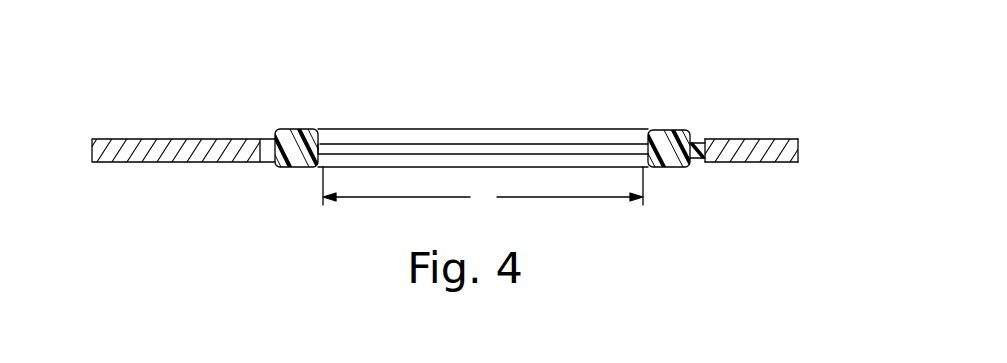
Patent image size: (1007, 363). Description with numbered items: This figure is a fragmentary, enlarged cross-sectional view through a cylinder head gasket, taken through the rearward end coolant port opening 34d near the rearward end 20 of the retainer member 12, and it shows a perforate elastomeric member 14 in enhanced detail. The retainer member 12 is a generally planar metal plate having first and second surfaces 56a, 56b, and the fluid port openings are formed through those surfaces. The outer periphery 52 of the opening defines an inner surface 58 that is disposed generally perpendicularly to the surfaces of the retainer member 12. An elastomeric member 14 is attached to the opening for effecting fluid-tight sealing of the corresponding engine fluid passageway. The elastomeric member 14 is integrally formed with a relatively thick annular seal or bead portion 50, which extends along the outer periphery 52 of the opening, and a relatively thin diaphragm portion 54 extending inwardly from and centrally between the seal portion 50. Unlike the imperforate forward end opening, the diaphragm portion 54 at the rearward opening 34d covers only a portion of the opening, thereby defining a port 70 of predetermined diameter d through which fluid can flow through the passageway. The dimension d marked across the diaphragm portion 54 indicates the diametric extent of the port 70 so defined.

The rearward end coolant port opening 34d is at (562, 61).
The rearward end 20 is at (93, 151).
The port 70 is at (378, 155).
The elastomeric member 14 is at (465, 130).
The diaphragm portion 54 is at (646, 131).
The seal portion 50 is at (667, 131).
The inner surface 58 is at (698, 162).
The outer periphery 52 is at (705, 139).
The retainer member 12 is at (763, 139).
The first surface 56a is at (790, 139).
The second surface 56b is at (782, 163).